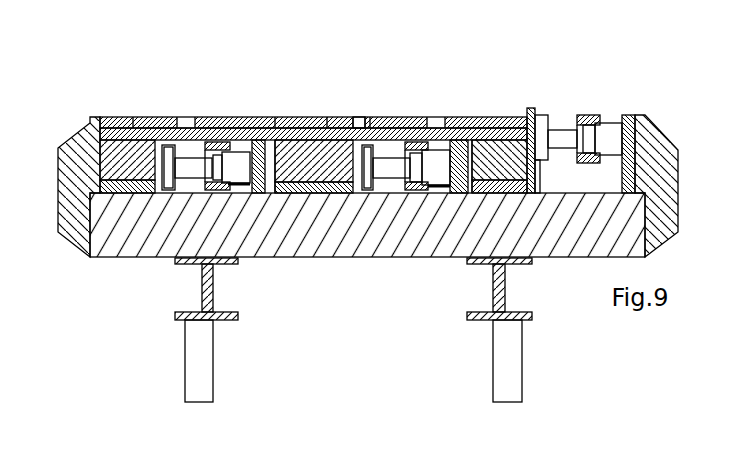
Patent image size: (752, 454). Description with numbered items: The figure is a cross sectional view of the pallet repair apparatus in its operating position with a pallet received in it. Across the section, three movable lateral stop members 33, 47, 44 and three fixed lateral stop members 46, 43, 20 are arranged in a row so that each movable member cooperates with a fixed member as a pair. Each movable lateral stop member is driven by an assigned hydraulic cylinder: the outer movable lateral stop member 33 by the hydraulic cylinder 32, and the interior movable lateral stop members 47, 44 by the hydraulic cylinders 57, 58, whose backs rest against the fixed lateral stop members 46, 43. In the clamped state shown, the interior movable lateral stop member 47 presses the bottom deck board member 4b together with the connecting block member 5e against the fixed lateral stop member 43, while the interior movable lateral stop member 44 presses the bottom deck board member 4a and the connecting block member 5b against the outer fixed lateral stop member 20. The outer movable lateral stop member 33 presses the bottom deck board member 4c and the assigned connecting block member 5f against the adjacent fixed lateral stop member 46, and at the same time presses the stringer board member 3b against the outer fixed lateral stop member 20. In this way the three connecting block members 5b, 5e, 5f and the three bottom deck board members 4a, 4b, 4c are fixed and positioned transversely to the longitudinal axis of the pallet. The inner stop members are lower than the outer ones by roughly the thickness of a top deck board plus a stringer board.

The outer fixed lateral stop member 20 is at (93, 117).
The stringer board member 3b is at (303, 122).
The movable lateral stop member 44 is at (166, 128).
The movable lateral stop member 47 is at (361, 130).
The connecting block member 5b is at (128, 145).
The bottom deck board member 4a is at (125, 188).
The hydraulic cylinder 58 is at (192, 165).
The fixed lateral stop member 43 is at (270, 145).
The connecting block member 5e is at (325, 150).
The bottom deck board member 4b is at (328, 193).
The hydraulic cylinder 57 is at (388, 167).
The fixed lateral stop member 46 is at (468, 140).
The connecting block member 5f is at (500, 150).
The bottom deck board member 4c is at (455, 193).
The outer movable lateral stop member 33 is at (528, 110).
The hydraulic cylinder 32 is at (563, 138).